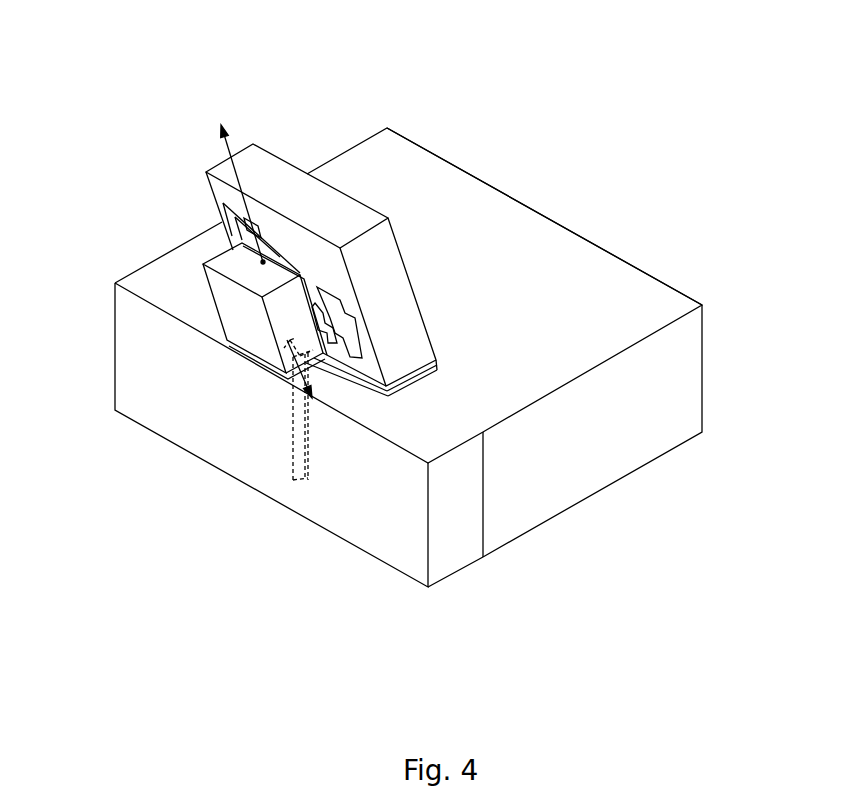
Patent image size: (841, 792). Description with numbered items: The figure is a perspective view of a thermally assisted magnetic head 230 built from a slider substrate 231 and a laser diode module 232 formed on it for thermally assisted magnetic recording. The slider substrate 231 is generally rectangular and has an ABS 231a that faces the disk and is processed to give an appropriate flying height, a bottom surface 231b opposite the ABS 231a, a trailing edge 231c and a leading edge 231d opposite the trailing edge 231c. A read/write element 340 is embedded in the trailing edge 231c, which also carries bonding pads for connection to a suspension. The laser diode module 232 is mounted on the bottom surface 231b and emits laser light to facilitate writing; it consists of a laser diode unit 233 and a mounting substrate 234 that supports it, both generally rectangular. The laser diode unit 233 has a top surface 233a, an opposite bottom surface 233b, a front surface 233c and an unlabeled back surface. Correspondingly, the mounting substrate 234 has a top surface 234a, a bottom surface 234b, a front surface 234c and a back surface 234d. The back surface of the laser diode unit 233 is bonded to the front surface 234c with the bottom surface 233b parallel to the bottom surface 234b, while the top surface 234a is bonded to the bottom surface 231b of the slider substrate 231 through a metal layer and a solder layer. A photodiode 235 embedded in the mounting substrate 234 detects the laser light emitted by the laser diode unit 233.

The thermally assisted magnetic head 230 is at (98, 46).
The slider substrate 231 is at (609, 228).
The ABS 231a is at (577, 505).
The bottom surface 231b is at (503, 222).
The trailing edge 231c is at (400, 498).
The leading edge 231d is at (665, 283).
The laser diode module 232 is at (110, 108).
The laser diode unit 233 is at (213, 244).
The top surface 233a is at (245, 357).
The bottom surface 233b is at (225, 268).
The front surface 233c is at (230, 311).
The mounting substrate 234 is at (206, 157).
The top surface 234a is at (380, 387).
The bottom surface 234b is at (248, 163).
The front surface 234c is at (312, 255).
The back surface 234d is at (403, 263).
The photodiode 235 is at (268, 227).
The read/write element 340 is at (292, 387).